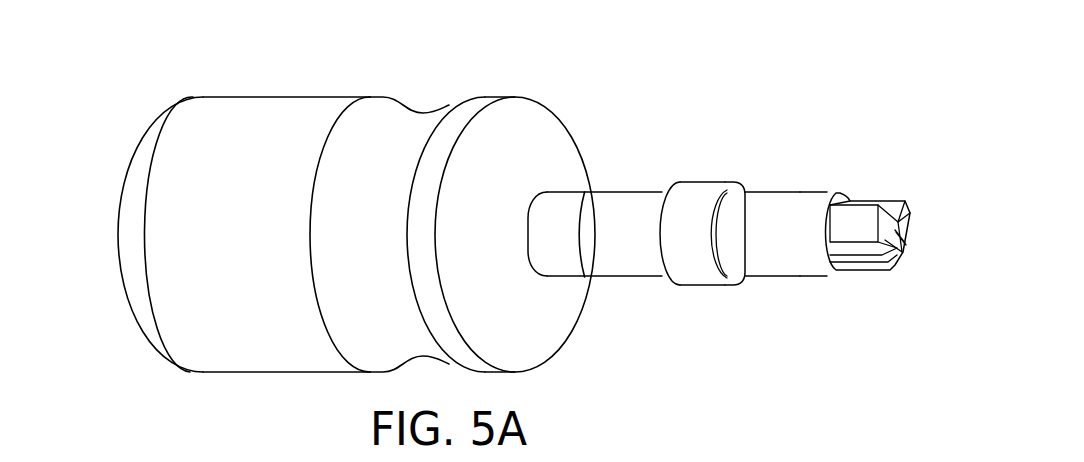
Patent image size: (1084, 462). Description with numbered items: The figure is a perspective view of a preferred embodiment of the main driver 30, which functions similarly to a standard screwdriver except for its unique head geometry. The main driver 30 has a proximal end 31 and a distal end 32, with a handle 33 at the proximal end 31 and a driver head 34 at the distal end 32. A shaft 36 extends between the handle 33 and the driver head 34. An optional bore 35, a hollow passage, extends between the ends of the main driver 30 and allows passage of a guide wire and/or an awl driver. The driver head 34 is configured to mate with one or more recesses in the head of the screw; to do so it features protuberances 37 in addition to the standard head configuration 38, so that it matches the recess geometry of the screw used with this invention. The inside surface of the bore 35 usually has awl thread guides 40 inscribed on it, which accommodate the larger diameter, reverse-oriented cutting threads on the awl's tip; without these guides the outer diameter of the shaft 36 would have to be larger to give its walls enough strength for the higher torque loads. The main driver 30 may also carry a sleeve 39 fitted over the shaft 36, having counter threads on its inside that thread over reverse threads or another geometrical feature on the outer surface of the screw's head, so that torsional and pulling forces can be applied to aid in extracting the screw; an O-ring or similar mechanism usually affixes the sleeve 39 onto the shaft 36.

The main driver 30 is at (508, 197).
The proximal end 31 is at (122, 237).
The handle 33 is at (250, 110).
The shaft 36 is at (637, 200).
The sleeve 39 is at (693, 268).
The distal end 32 is at (833, 277).
The driver head 34 is at (838, 202).
The standard head configuration 38 is at (862, 220).
The bore 35 is at (890, 263).
The protuberances 37 is at (907, 209).
The awl thread guides 40 is at (903, 242).